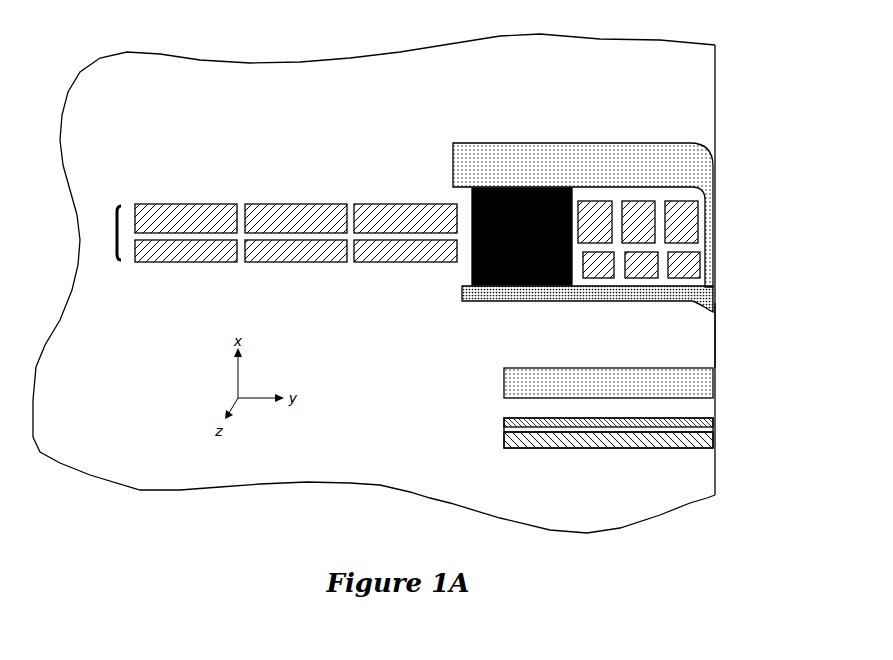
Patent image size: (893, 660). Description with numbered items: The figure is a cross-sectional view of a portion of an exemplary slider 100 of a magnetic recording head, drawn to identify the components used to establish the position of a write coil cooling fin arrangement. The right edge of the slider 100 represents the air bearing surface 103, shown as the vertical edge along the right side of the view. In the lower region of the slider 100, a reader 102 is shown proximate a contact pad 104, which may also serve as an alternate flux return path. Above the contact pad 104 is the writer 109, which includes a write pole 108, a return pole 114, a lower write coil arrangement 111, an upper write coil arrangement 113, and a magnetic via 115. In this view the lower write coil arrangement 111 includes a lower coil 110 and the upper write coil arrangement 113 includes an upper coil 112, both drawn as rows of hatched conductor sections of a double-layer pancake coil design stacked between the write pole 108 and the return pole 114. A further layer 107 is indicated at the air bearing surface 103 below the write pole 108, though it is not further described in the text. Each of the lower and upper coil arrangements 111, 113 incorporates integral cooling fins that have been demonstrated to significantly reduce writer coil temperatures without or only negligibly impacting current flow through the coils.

The slider 100 is at (754, 74).
The reader 102 is at (713, 440).
The air bearing surface 103 is at (715, 120).
The contact pad 104 is at (713, 387).
The passivation layer 107 is at (715, 325).
The write pole 108 is at (715, 303).
The writer 109 is at (117, 232).
The lower coil 110 is at (428, 263).
The lower write coil arrangement 111 is at (322, 307).
The upper coil 112 is at (372, 204).
The upper write coil arrangement 113 is at (291, 189).
The return pole 114 is at (697, 175).
The magnetic via 115 is at (510, 287).